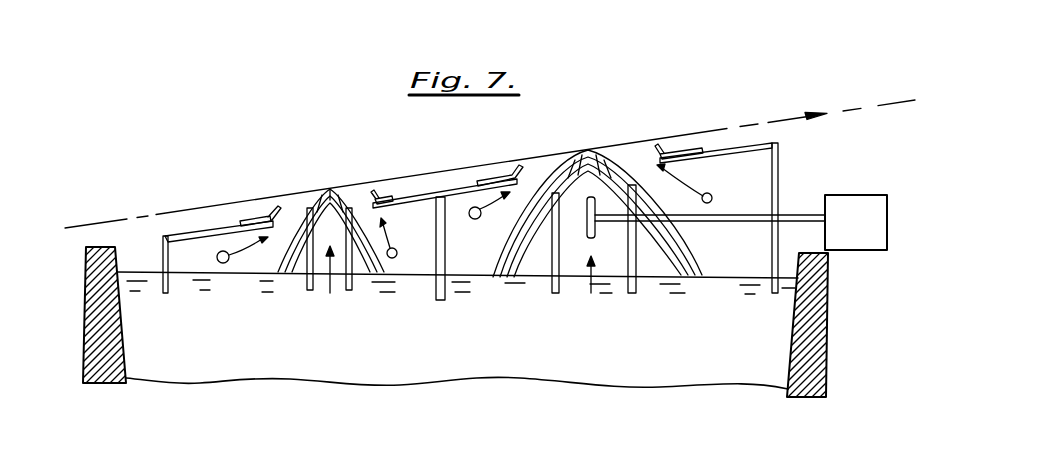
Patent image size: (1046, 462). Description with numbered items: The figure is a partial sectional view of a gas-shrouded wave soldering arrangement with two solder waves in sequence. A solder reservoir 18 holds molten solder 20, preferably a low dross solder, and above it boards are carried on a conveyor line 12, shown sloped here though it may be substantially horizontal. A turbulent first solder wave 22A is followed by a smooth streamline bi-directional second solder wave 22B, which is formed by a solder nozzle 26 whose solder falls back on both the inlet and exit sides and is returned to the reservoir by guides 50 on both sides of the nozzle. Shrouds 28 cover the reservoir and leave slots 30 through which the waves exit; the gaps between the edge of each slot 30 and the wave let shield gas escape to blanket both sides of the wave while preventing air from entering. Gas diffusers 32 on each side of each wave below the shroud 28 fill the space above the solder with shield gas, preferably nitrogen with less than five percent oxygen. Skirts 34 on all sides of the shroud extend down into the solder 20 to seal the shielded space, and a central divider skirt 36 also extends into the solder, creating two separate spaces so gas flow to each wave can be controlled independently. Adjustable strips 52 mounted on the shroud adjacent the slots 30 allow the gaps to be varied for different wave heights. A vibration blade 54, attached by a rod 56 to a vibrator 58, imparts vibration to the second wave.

The conveyor line 12 is at (127, 218).
The solder reservoir 18 is at (823, 316).
The solder 20 is at (432, 382).
The first solder wave 22A is at (345, 186).
The second solder wave 22B is at (588, 146).
The solder nozzle 26 is at (306, 292).
The shroud 28 is at (197, 230).
The slots 30 is at (290, 208).
The gas diffusers 32 is at (217, 257).
The skirts 34 is at (170, 292).
The divider skirt 36 is at (448, 300).
The guides 50 is at (530, 304).
The adjustable strips 52 is at (257, 218).
The vibration blade 54 is at (589, 238).
The rod 56 is at (714, 222).
The vibrator 58 is at (856, 218).